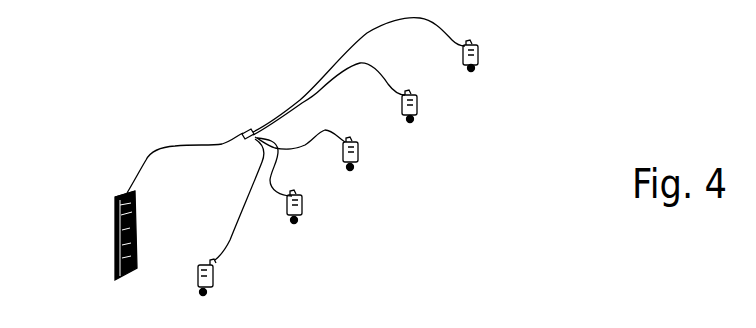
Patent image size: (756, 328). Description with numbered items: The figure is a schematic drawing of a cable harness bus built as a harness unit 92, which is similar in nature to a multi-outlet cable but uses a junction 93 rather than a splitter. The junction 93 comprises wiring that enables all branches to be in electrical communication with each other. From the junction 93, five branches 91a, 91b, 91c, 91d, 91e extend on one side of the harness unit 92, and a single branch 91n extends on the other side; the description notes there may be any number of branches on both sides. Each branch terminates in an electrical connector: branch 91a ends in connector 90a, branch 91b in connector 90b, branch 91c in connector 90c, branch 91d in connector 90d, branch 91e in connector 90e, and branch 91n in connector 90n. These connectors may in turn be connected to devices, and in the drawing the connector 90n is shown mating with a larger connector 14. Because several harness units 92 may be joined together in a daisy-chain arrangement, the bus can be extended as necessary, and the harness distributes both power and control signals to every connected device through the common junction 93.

The electronic control unit connector 14 is at (118, 248).
The electrical connector 90n is at (115, 200).
The electrical connector 90a is at (476, 45).
The electrical connector 90b is at (403, 88).
The electrical connector 90c is at (345, 140).
The electrical connector 90d is at (295, 187).
The electrical connector 90e is at (215, 268).
The branch 91a is at (393, 23).
The branch 91b is at (383, 82).
The branch 91c is at (330, 142).
The branch 91d is at (278, 193).
The branch 91e is at (242, 208).
The branch 91n is at (148, 160).
The harness unit 92 is at (185, 101).
The junction 93 is at (250, 130).